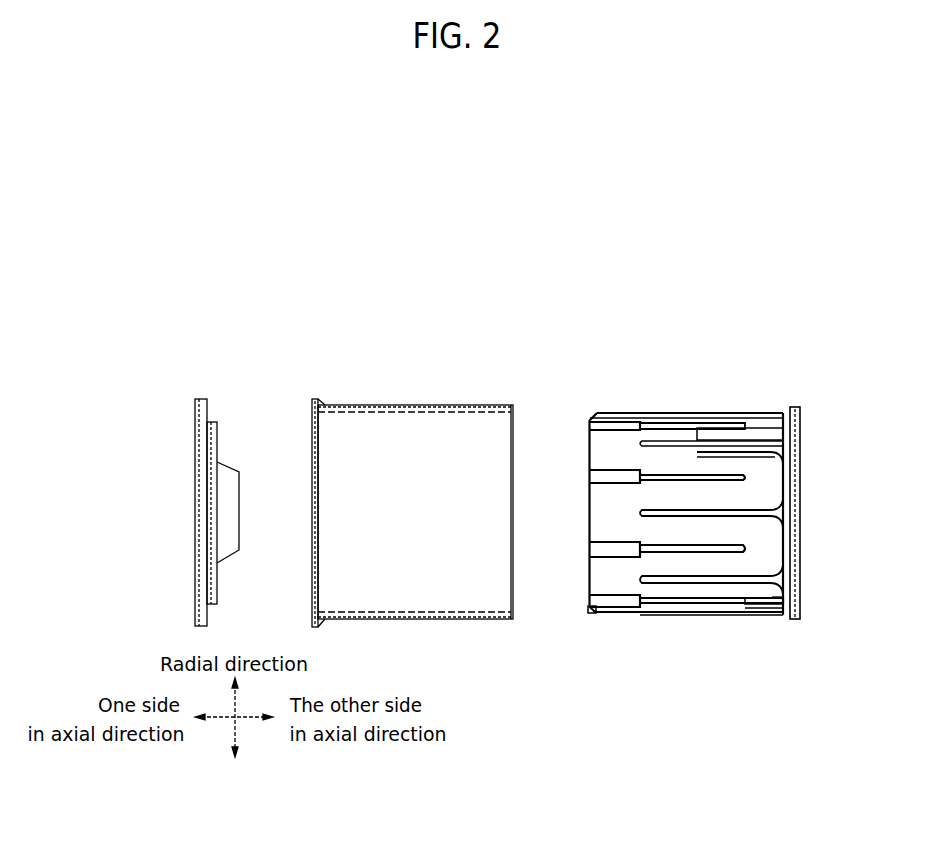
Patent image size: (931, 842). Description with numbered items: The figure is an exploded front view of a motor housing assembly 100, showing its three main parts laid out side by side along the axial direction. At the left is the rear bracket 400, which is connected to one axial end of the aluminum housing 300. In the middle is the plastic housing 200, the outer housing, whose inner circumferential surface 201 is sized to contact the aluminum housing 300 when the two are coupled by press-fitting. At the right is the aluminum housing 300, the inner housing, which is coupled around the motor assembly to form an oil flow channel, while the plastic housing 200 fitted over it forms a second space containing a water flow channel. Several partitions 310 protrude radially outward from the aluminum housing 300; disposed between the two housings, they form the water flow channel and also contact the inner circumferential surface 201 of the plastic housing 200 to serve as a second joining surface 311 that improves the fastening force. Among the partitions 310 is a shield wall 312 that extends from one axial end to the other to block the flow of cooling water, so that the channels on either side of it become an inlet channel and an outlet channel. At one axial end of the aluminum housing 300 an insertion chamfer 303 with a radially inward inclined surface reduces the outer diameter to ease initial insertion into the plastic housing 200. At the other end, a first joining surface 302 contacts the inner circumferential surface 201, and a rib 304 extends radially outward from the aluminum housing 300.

The motor housing assembly 100 is at (195, 291).
The rear bracket 400 is at (214, 377).
The plastic housing 200 is at (418, 377).
The inner circumferential surface 201 is at (483, 412).
The aluminum housing 300 is at (668, 380).
The second joining surface 311 is at (620, 469).
The shield wall 312 is at (707, 413).
The partition 310 is at (705, 461).
The rib 304 is at (800, 443).
The insertion chamfer 303 is at (590, 608).
The first joining surface 302 is at (785, 617).